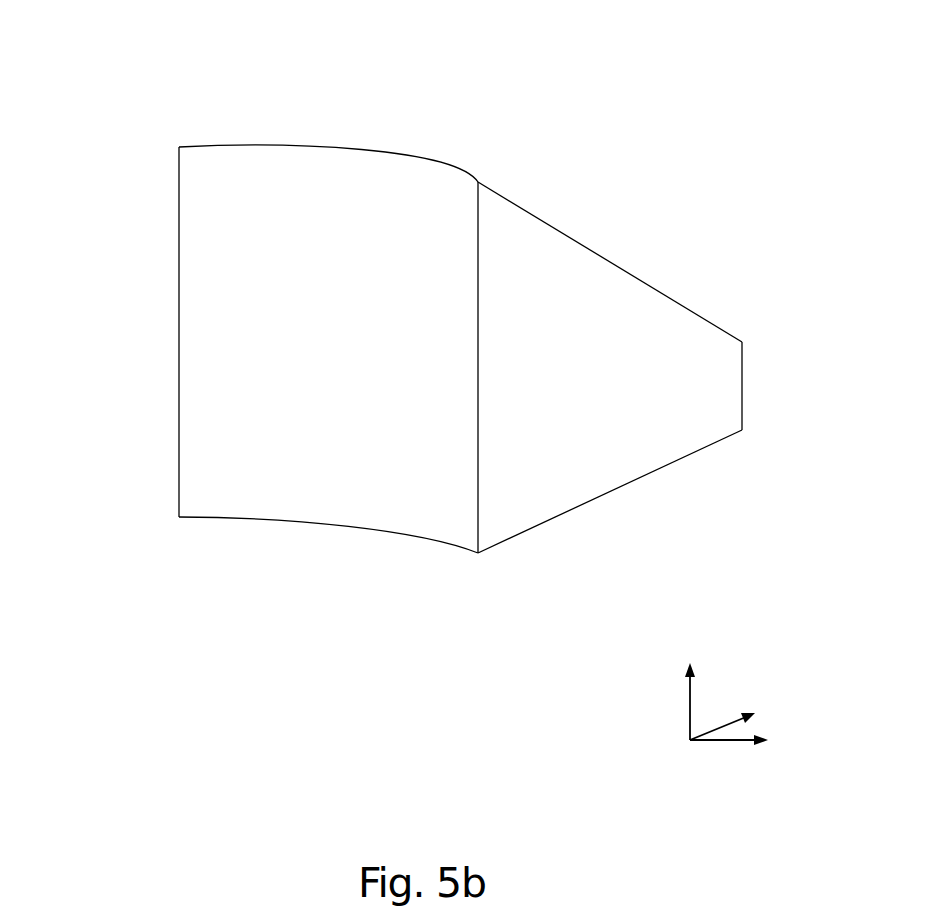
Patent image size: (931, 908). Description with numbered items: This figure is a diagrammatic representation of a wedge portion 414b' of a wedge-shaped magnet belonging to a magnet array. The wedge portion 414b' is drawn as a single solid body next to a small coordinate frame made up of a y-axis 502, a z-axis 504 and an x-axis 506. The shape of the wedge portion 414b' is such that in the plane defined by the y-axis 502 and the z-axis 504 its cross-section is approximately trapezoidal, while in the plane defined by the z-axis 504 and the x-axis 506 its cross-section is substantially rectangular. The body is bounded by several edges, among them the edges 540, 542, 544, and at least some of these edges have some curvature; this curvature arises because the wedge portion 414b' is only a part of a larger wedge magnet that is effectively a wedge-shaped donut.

The wedge portion 414b' is at (387, 282).
The edge 544 is at (373, 150).
The edge 540 is at (448, 545).
The edge 542 is at (742, 342).
The y-axis 502 is at (712, 722).
The z-axis 504 is at (688, 710).
The x-axis 506 is at (715, 745).